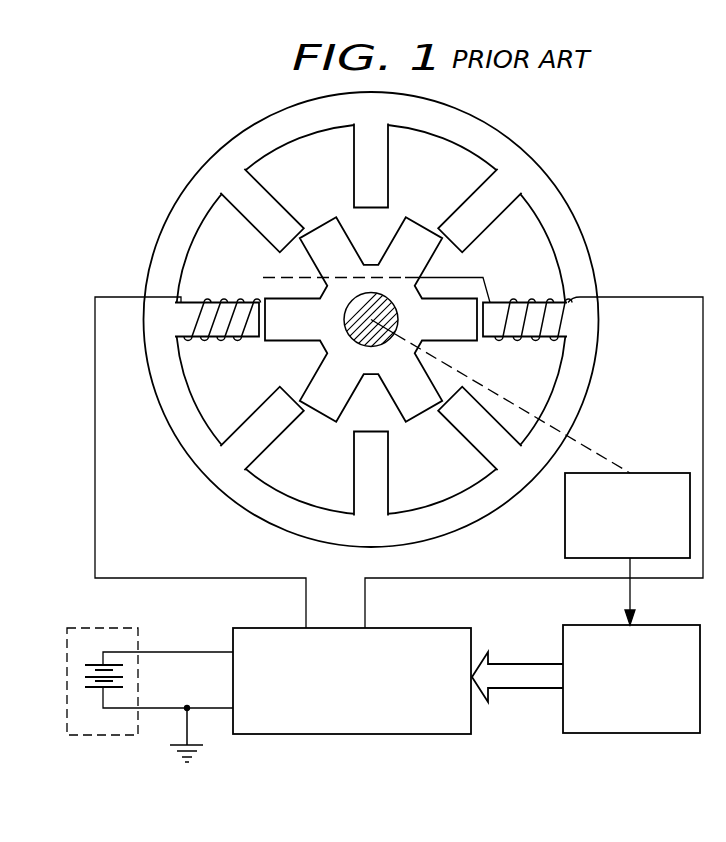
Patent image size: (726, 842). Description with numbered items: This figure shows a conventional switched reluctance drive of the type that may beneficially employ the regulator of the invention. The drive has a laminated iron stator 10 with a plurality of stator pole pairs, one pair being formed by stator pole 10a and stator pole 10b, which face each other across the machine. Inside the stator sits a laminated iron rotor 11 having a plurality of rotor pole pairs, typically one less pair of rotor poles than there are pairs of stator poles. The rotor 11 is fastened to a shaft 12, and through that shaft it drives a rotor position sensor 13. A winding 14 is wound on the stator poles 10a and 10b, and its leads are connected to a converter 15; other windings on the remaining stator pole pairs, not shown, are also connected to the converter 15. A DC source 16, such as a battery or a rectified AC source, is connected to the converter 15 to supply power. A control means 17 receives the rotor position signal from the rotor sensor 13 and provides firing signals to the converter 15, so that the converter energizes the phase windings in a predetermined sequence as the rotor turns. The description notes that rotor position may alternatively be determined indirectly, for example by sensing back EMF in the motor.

The stator 10 is at (371, 319).
The stator pole 10a is at (253, 338).
The stator pole 10b is at (495, 338).
The rotor 11 is at (395, 236).
The shaft 12 is at (383, 347).
The rotor position sensor 13 is at (616, 549).
The winding 14 is at (184, 301).
The converter 15 is at (337, 706).
The DC source 16 is at (118, 627).
The control means 17 is at (619, 722).